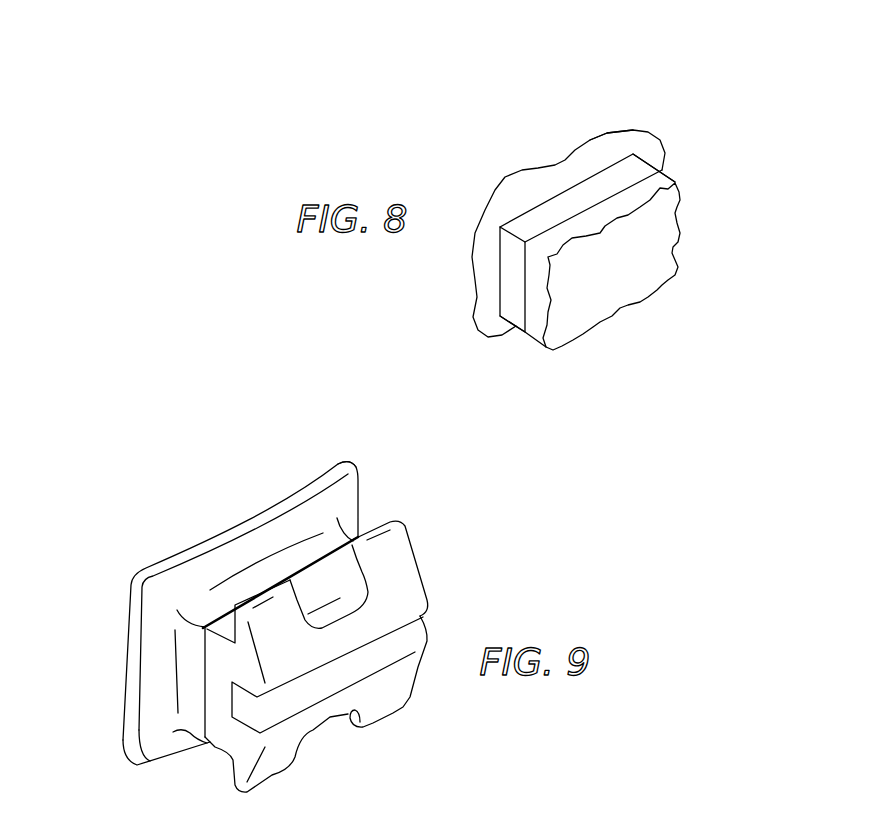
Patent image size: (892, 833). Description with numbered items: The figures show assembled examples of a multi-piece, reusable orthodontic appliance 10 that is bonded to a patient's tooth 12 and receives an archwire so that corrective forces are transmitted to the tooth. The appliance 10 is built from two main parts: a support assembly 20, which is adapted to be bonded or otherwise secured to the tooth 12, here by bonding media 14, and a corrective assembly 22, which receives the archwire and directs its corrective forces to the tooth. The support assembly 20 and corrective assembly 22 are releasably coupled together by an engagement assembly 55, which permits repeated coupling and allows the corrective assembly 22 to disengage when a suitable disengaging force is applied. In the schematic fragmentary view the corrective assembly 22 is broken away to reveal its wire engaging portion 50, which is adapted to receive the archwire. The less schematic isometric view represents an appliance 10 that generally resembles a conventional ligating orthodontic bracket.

In FIG. 8, the orthodontic appliance 10 is at (713, 95).
In FIG. 9, the orthodontic appliance 10 is at (260, 473).
In FIG. 8, the tooth 12 is at (644, 119).
In FIG. 8, the bonding media 14 is at (587, 177).
In FIG. 8, the support assembly 20 is at (652, 155).
In FIG. 9, the support assembly 20 is at (120, 663).
In FIG. 8, the corrective assembly 22 is at (688, 212).
In FIG. 9, the corrective assembly 22 is at (415, 710).
In FIG. 8, the wire engaging portion 50 is at (684, 243).
In FIG. 8, the engagement assembly 55 is at (522, 337).
In FIG. 9, the engagement assembly 55 is at (195, 665).